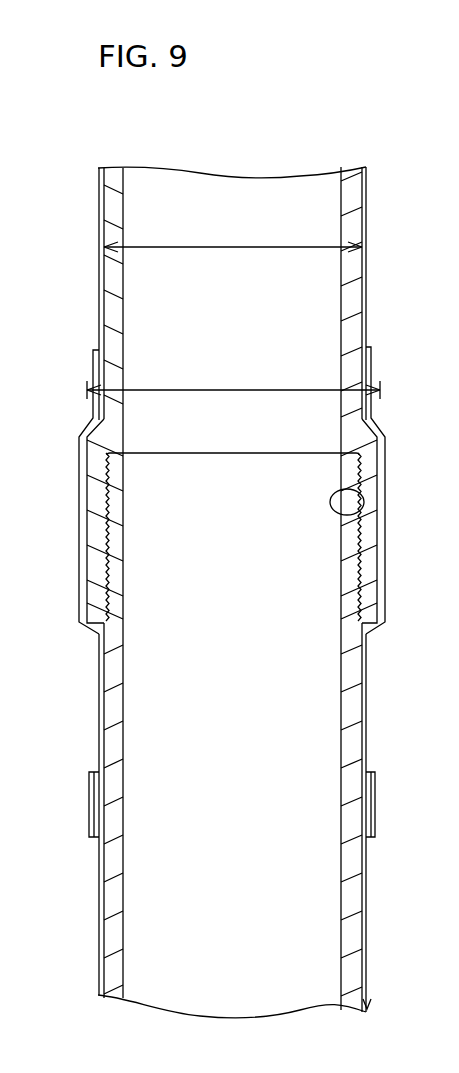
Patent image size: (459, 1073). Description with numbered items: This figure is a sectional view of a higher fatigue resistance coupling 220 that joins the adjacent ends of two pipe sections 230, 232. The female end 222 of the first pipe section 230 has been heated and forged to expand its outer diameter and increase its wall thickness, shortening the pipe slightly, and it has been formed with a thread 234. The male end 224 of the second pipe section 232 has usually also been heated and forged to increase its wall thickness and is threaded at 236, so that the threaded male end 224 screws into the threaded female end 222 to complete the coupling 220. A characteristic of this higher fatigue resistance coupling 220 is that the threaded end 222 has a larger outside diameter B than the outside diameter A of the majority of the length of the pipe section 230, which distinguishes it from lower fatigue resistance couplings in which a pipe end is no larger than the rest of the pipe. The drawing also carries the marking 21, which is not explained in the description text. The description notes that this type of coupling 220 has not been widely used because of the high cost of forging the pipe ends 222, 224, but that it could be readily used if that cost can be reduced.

The pipe joint assembly 21 is at (411, 540).
The higher fatigue resistance coupling 220 is at (59, 451).
The female end 222 is at (92, 528).
The male end 224 is at (113, 563).
The pipe section 230 is at (108, 212).
The pipe section 232 is at (110, 936).
The thread 234 is at (364, 512).
The thread 236 is at (362, 570).
The outside diameter A is at (211, 246).
The outside diameter B is at (205, 389).